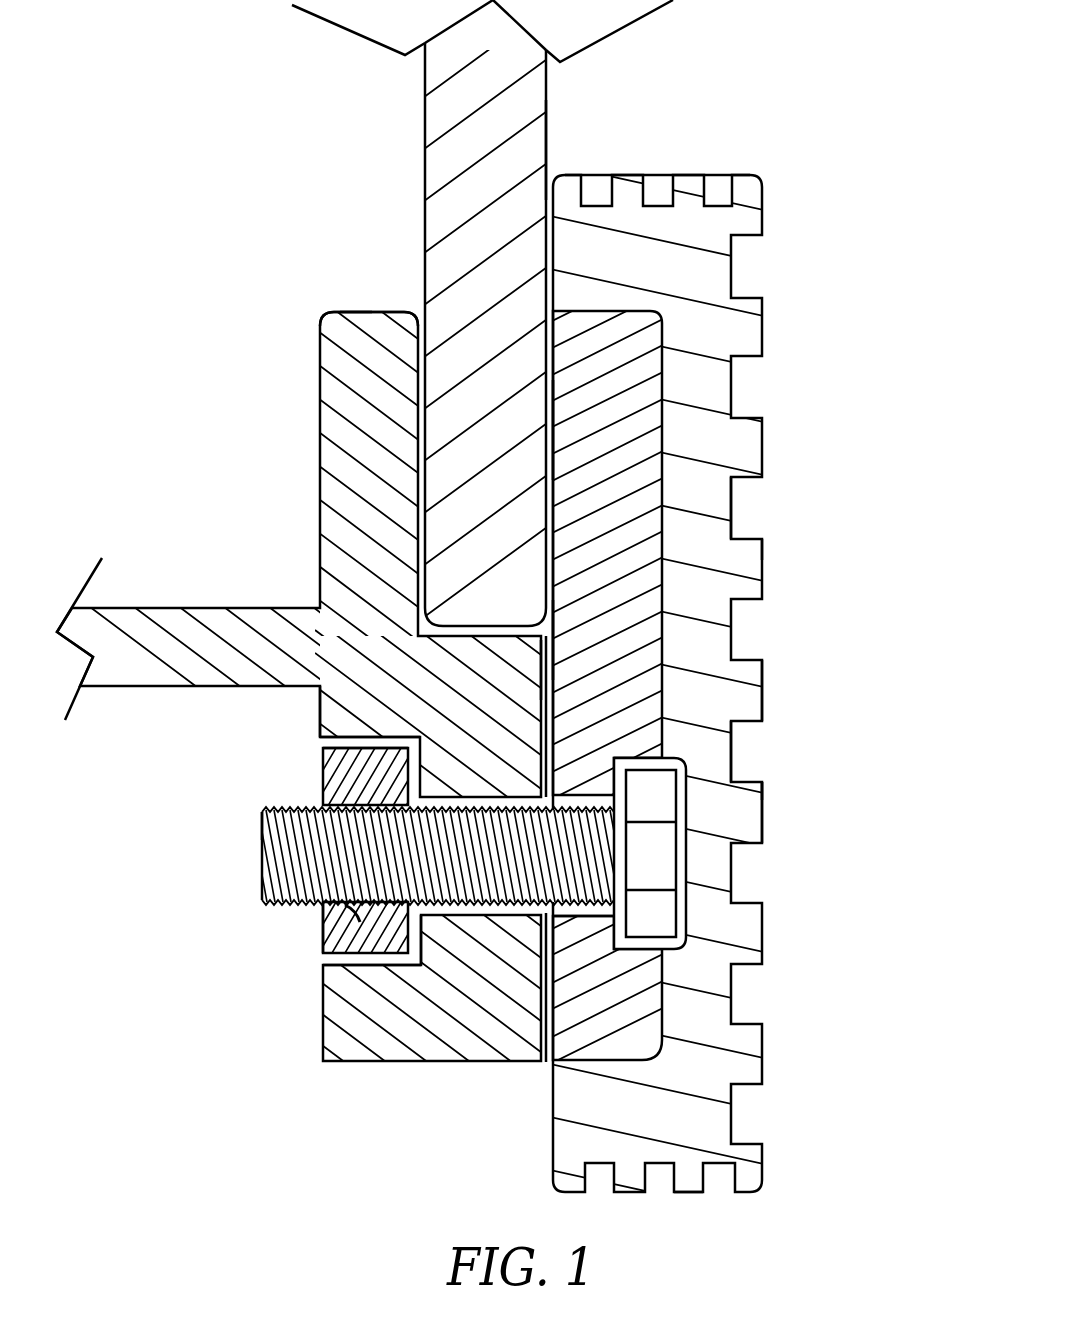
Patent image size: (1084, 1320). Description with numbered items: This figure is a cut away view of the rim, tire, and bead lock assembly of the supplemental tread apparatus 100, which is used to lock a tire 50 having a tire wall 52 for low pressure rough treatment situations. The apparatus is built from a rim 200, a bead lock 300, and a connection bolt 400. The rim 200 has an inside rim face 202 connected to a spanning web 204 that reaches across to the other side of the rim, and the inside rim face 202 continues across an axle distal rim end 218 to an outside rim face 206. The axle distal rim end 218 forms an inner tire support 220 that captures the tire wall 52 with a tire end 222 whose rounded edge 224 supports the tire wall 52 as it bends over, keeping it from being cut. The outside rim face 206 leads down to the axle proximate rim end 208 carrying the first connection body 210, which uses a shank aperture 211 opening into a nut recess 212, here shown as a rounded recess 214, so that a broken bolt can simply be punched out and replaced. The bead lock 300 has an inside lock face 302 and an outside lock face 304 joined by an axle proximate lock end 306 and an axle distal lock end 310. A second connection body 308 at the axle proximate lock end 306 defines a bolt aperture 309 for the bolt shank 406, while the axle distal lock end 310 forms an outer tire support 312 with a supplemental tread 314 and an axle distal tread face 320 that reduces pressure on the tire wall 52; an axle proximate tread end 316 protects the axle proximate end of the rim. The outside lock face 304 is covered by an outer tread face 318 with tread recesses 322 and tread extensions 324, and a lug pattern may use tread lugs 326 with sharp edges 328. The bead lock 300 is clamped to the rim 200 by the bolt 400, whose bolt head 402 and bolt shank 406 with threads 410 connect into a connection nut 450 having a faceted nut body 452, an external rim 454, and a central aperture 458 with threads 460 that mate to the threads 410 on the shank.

The tire 50 is at (547, 115).
The tire wall 52 is at (548, 150).
The supplemental tread apparatus 100 is at (765, 177).
The rim 200 is at (461, 653).
The inside rim face 202 is at (320, 470).
The spanning web 204 is at (160, 607).
The outside rim face 206 is at (548, 662).
The axle proximate rim end 208 is at (337, 1062).
The first connection body 210 is at (323, 967).
The shank aperture 211 is at (447, 925).
The nut recess 212 is at (354, 745).
The rounded recess 214 is at (322, 742).
The axle distal rim end 218 is at (320, 332).
The inner tire support 220 is at (380, 311).
The tire end 222 is at (357, 311).
The rounded edge 224 is at (408, 311).
The bead lock 300 is at (737, 632).
The inside lock face 302 is at (556, 630).
The outside lock face 304 is at (556, 662).
The axle proximate lock end 306 is at (664, 1042).
The second connection body 308 is at (635, 758).
The bolt aperture 309 is at (585, 916).
The axle distal lock end 310 is at (556, 412).
The outer tire support 312 is at (556, 462).
The supplemental tread 314 is at (762, 547).
The axle proximate tread end 316 is at (694, 1192).
The outer tread face 318 is at (762, 813).
The axle distal tread face 320 is at (693, 177).
The tread recesses 322 is at (733, 505).
The tread extensions 324 is at (762, 680).
The tread lugs 326 is at (732, 745).
The sharp edges 328 is at (762, 778).
The connection bolt 400 is at (525, 853).
The bolt head 402 is at (668, 926).
The bolt shank 406 is at (290, 902).
The threads 410 is at (278, 800).
The connection nut 450 is at (310, 913).
The faceted nut body 452 is at (373, 957).
The external rim 454 is at (370, 748).
The central aperture 458 is at (330, 934).
The threads 460 is at (373, 950).